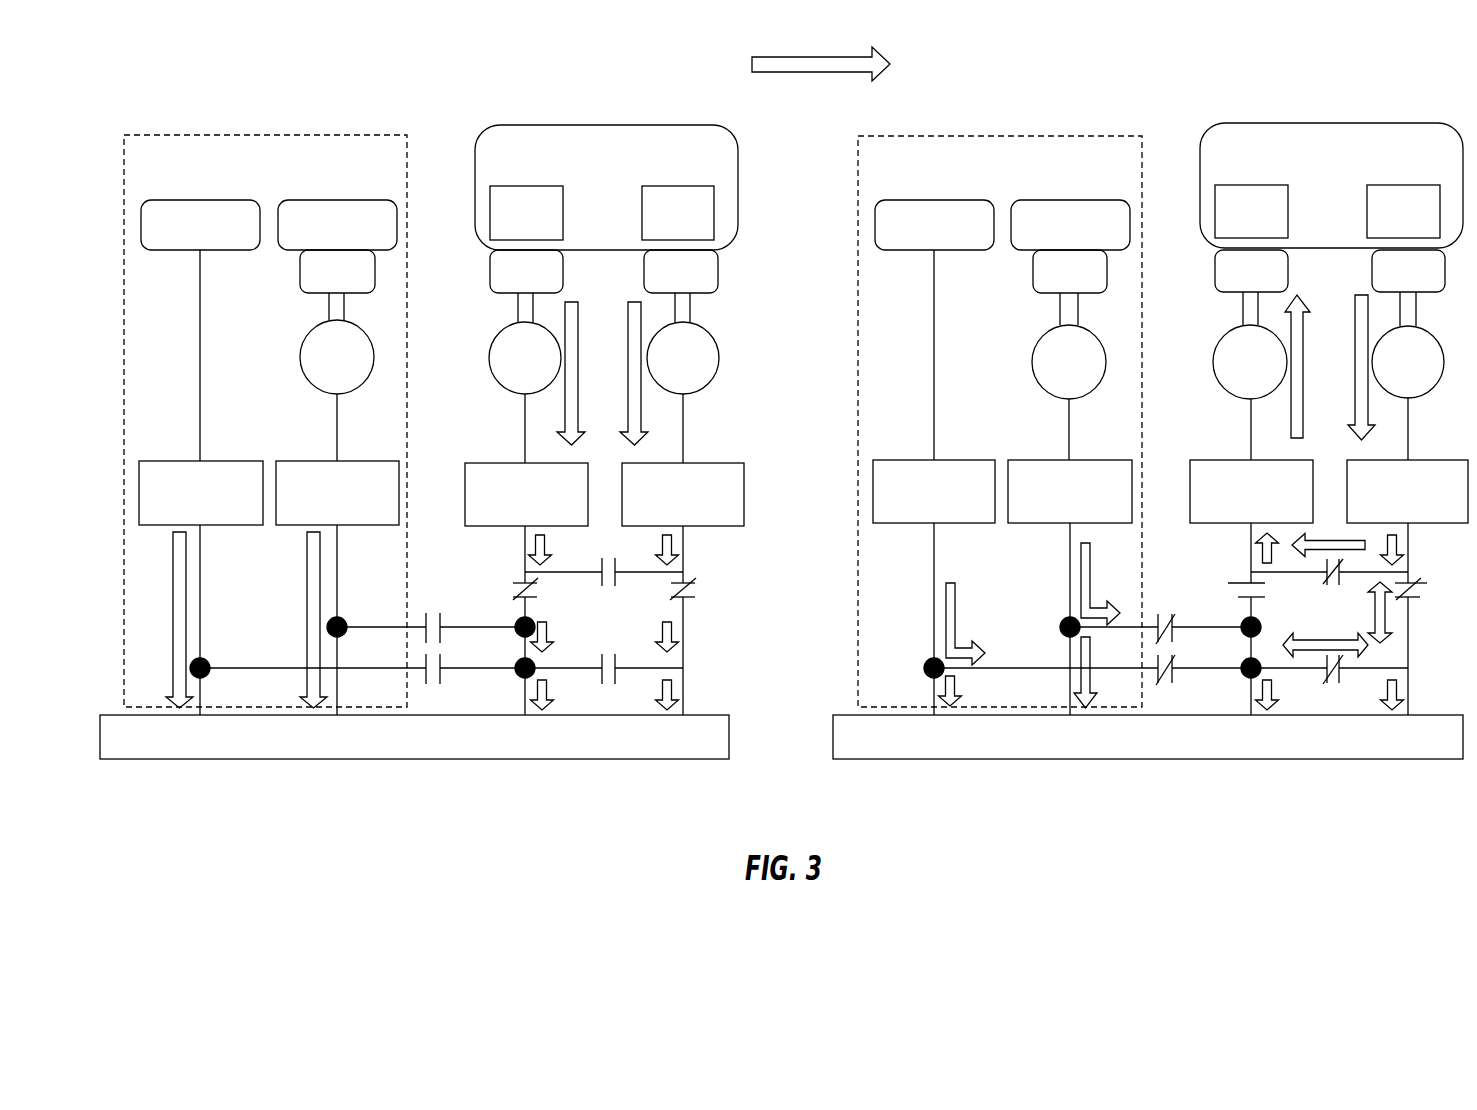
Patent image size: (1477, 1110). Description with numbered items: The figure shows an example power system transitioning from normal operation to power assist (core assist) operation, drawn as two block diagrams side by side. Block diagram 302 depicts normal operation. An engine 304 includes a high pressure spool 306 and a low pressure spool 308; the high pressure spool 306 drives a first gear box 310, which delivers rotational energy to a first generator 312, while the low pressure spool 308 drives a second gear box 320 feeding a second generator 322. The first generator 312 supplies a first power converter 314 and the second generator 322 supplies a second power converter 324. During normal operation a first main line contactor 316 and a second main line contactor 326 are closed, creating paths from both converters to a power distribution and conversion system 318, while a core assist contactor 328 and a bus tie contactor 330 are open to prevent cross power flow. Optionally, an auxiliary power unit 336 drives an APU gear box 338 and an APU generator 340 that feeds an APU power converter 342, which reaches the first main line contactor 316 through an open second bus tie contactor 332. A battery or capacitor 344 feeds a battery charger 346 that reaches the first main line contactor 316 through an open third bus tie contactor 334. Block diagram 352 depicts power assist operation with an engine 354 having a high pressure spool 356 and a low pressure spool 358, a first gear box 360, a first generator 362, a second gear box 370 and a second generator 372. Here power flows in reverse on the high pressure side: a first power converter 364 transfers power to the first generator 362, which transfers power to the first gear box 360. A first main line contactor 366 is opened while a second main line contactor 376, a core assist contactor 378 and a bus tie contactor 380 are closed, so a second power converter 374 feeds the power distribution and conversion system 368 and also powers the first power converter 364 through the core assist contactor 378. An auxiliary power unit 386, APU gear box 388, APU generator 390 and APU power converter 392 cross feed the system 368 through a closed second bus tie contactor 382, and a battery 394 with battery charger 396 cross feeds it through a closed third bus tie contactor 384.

The block diagram 302 is at (422, 401).
The engine 304 is at (625, 174).
The high pressure spool 306 is at (545, 229).
The low pressure spool 308 is at (696, 229).
The first gear box 310 is at (545, 287).
The first generator 312 is at (543, 374).
The first power converter 314 is at (545, 506).
The first main line contactor 316 is at (512, 583).
The power distribution and conversion system 318 is at (425, 752).
The second gear box 320 is at (699, 287).
The second generator 322 is at (701, 374).
The second power converter 324 is at (701, 506).
The second main line contactor 326 is at (696, 583).
The core assist contactor 328 is at (624, 621).
The bus tie contactor 330 is at (624, 713).
The second bus tie contactor 332 is at (431, 613).
The third bus tie contactor 334 is at (362, 685).
The auxiliary power unit 336 is at (355, 238).
The APU gear box 338 is at (355, 287).
The APU generator 340 is at (355, 373).
The APU power converter 342 is at (355, 506).
The battery 344 is at (218, 238).
The battery charger 346 is at (218, 506).
The block diagram 352 is at (1150, 401).
The engine 354 is at (1351, 174).
The high pressure spool 356 is at (1270, 228).
The low pressure spool 358 is at (1421, 228).
The first gear box 360 is at (1270, 286).
The first generator 362 is at (1268, 378).
The first power converter 364 is at (1270, 506).
The first main line contactor 366 is at (1230, 580).
The power distribution and conversion system 368 is at (1155, 752).
The second gear box 370 is at (1426, 286).
The second generator 372 is at (1426, 378).
The second power converter 374 is at (1426, 506).
The second main line contactor 376 is at (1430, 588).
The core assist contactor 378 is at (1329, 594).
The bus tie contactor 380 is at (1329, 686).
The second bus tie contactor 382 is at (1160, 614).
The third bus tie contactor 384 is at (1092, 686).
The auxiliary power unit 386 is at (1088, 238).
The APU gear box 388 is at (1088, 287).
The APU generator 390 is at (1087, 378).
The APU power converter 392 is at (1088, 506).
The battery 394 is at (952, 238).
The battery charger 396 is at (952, 506).